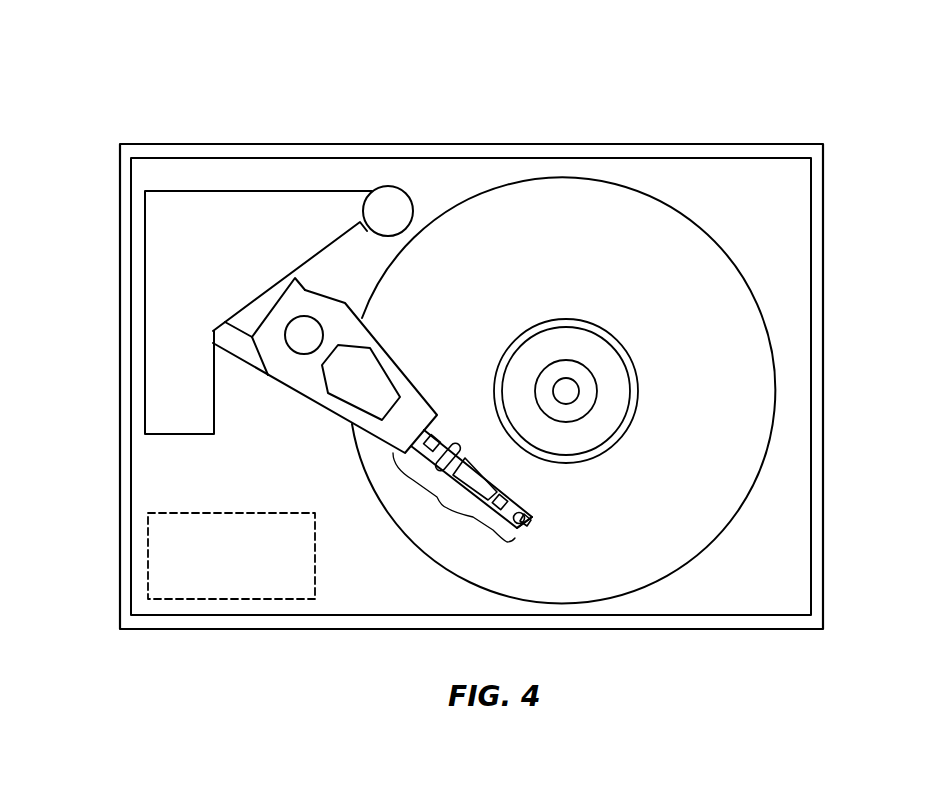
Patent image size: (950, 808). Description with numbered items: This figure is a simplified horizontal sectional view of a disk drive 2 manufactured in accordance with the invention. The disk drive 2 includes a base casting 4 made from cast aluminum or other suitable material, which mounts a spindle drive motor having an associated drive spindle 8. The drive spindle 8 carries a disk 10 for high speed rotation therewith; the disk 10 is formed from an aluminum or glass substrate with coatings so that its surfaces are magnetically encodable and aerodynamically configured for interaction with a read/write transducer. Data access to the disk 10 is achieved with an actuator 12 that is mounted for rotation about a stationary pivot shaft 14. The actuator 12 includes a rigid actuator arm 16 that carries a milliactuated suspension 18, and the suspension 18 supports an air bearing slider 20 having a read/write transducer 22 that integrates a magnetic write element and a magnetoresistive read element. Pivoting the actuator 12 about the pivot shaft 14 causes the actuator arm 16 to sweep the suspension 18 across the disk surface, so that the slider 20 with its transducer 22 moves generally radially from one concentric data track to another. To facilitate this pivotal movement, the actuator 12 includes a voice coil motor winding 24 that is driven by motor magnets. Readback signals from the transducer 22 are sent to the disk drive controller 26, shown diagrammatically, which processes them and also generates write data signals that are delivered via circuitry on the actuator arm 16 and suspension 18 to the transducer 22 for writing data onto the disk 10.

The disk drive 2 is at (124, 42).
The base casting 4 is at (267, 143).
The drive spindle 8 is at (572, 391).
The disk 10 is at (591, 261).
The actuator 12 is at (291, 382).
The stationary pivot shaft 14 is at (297, 327).
The actuator arm 16 is at (348, 417).
The milliactuated suspension 18 is at (462, 487).
The air bearing slider 20 is at (541, 504).
The read/write transducer 22 is at (535, 524).
The voice coil motor winding 24 is at (315, 283).
The disk drive controller 26 is at (316, 596).